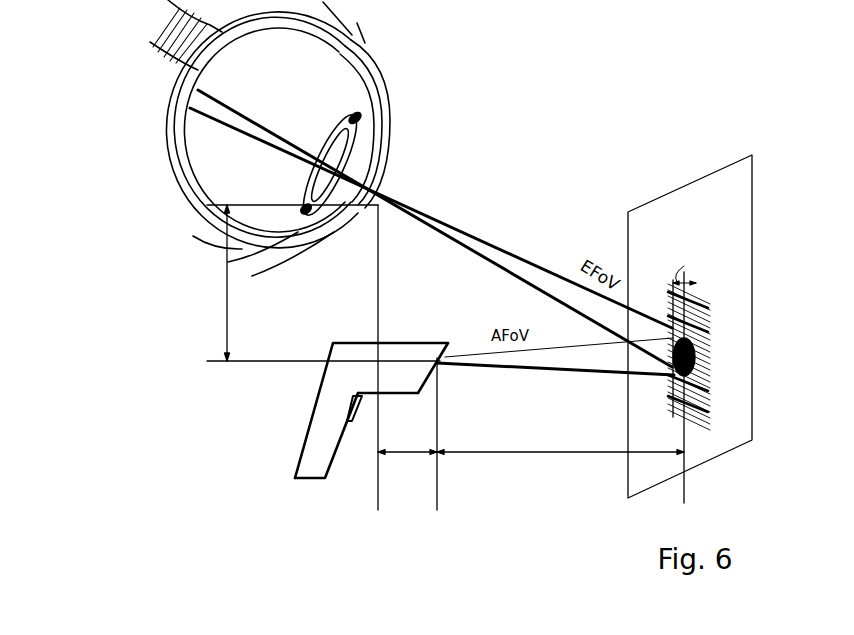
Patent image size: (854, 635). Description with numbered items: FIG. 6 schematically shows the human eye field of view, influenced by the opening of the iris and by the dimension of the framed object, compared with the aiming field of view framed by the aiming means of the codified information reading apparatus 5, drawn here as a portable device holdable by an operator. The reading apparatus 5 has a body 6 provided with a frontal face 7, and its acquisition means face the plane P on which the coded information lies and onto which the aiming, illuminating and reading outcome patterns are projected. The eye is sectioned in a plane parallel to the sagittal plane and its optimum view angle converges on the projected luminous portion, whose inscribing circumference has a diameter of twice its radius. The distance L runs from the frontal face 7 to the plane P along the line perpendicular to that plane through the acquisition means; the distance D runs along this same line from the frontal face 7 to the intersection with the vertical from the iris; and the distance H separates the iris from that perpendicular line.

The codified information reading apparatus 5 is at (293, 423).
The body 6 is at (325, 458).
The frontal face 7 is at (444, 379).
The distance H is at (227, 323).
The distance D is at (400, 455).
The distance L is at (578, 453).
The plane P is at (648, 238).